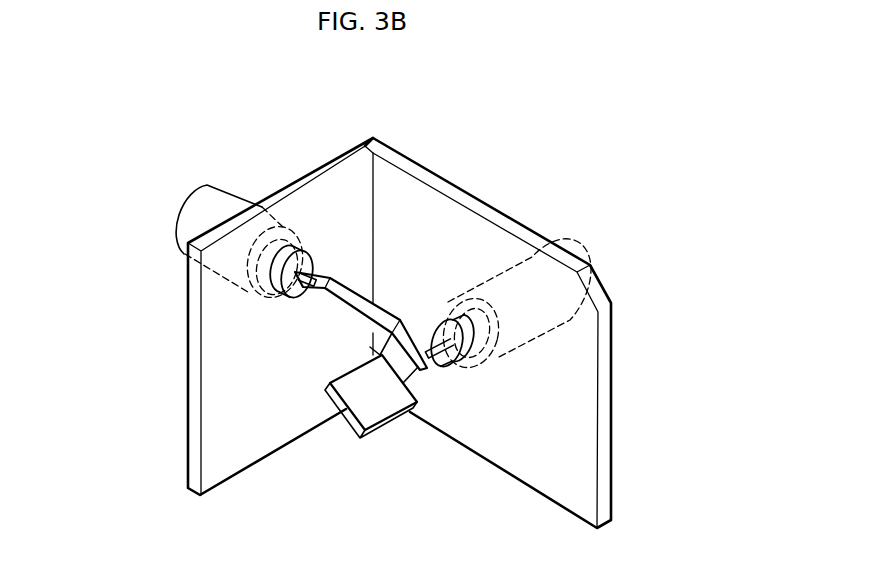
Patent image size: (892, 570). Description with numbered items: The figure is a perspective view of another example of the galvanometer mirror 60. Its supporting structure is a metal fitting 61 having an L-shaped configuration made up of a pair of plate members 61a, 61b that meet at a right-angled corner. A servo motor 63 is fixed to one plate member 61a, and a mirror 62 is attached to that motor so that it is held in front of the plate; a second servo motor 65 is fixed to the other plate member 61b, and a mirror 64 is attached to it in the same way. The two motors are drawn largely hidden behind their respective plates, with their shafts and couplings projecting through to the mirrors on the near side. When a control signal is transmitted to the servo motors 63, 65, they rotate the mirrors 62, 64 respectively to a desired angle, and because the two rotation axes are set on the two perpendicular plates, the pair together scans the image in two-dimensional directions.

The galvanometer mirror 60 is at (434, 308).
The metal fitting 61 is at (399, 308).
The plate member 61a is at (297, 178).
The plate member 61b is at (470, 194).
The mirror 62 is at (347, 310).
The servo motor 63 is at (228, 203).
The mirror 64 is at (375, 415).
The servo motor 65 is at (547, 340).